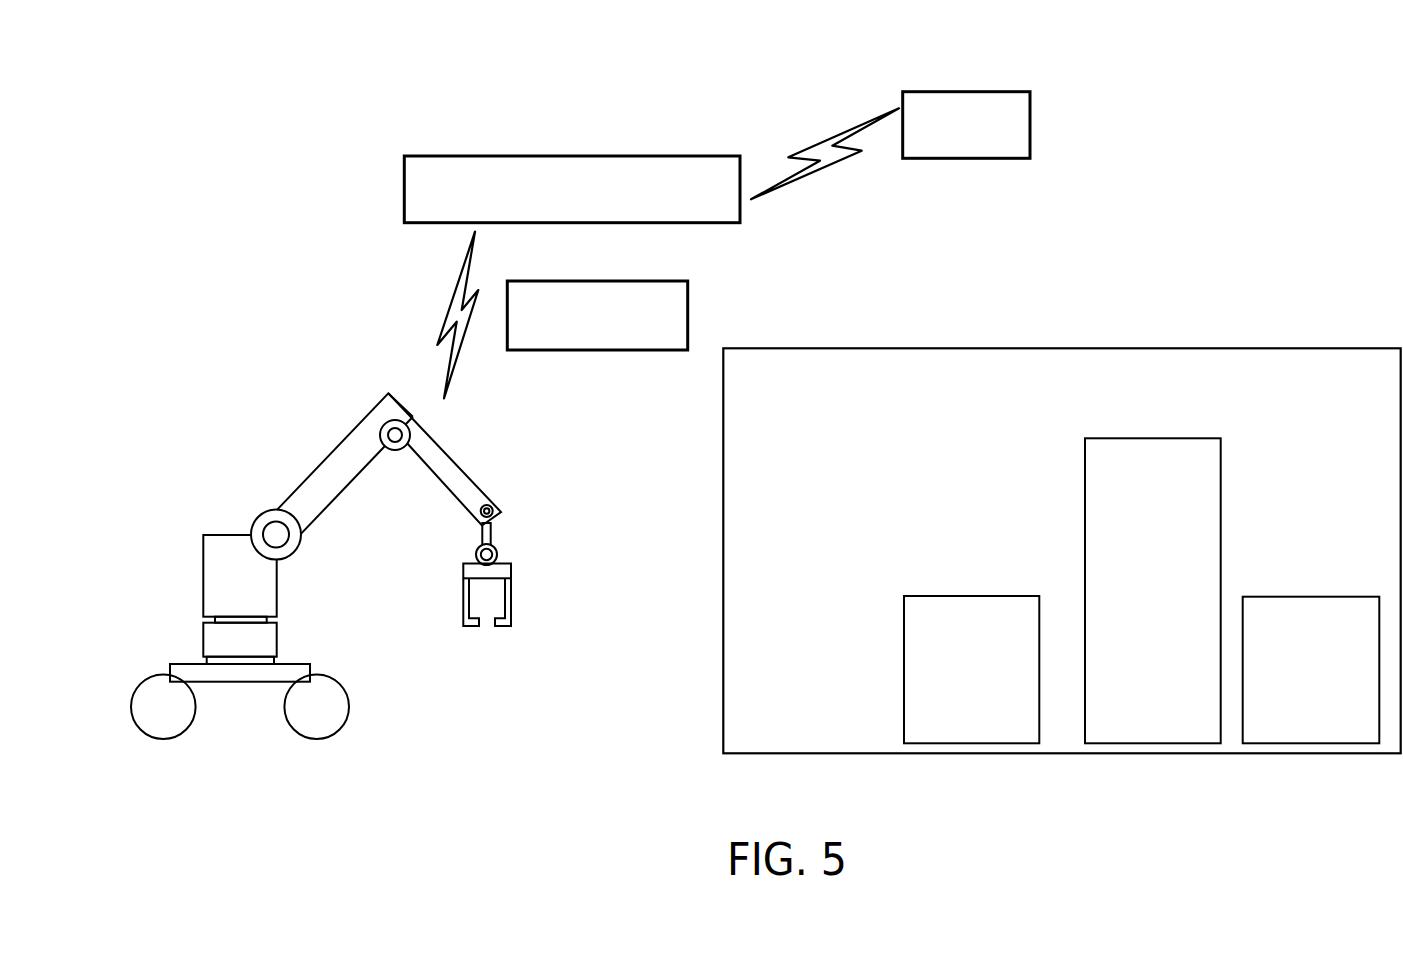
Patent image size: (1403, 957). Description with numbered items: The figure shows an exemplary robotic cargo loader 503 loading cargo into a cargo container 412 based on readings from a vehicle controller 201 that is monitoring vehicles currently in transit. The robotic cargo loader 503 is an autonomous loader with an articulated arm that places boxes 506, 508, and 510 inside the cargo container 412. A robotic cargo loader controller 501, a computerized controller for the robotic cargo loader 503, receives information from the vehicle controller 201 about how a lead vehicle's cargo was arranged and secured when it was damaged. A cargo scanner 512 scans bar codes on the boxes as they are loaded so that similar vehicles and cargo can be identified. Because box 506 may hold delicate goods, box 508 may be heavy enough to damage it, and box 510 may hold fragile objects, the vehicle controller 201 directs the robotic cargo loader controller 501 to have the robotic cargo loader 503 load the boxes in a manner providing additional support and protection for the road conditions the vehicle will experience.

The vehicle controller 201 is at (968, 92).
The robotic cargo loader controller 501 is at (582, 156).
The cargo scanner 512 is at (600, 350).
The robotic cargo loader 503 is at (333, 455).
The cargo container 412 is at (1058, 348).
The box 506 is at (998, 684).
The box 508 is at (1180, 606).
The box 510 is at (1332, 684).